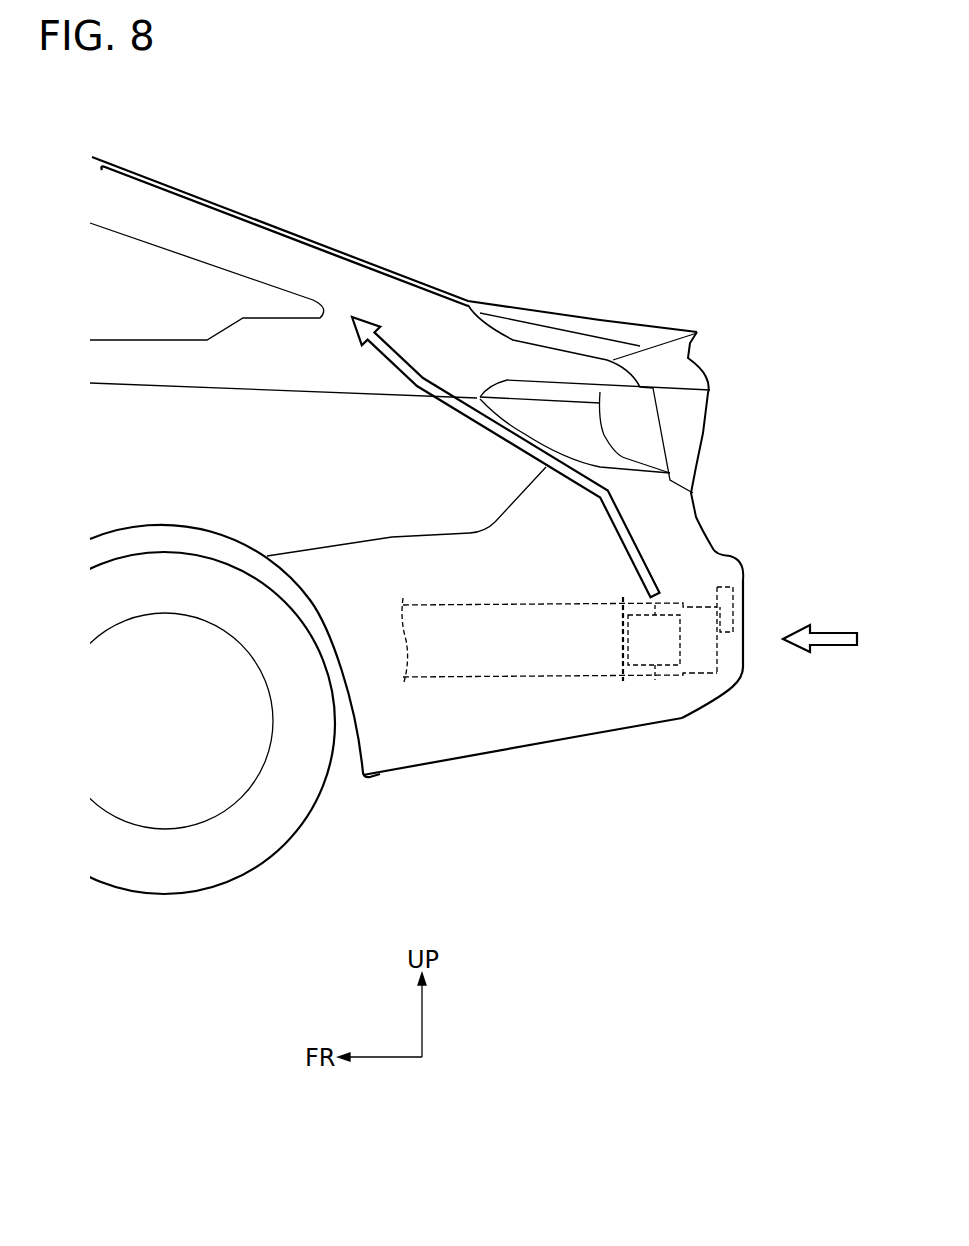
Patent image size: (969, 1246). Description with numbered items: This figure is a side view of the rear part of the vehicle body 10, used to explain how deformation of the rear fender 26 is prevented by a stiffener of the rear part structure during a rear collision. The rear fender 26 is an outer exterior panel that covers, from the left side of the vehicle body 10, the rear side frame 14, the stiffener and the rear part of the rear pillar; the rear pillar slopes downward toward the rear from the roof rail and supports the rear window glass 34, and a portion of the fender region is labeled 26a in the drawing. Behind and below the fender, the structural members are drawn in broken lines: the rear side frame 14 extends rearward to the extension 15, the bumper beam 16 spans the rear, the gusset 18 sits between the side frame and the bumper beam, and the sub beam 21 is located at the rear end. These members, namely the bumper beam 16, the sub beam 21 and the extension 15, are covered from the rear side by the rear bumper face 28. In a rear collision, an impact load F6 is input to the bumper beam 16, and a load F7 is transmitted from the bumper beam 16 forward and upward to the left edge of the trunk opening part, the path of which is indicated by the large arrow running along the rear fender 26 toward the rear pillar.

The vehicle body 10 is at (345, 206).
The rear side frame 14 is at (485, 677).
The extension 15 is at (628, 680).
The bumper beam 16 is at (723, 657).
The gusset 18 is at (663, 665).
The sub beam 21 is at (743, 607).
The rear fender 26 is at (343, 485).
The rear window glass 26a is at (463, 340).
The rear bumper face 28 is at (746, 643).
The rear window glass 34 is at (214, 204).
The impact load F6 is at (833, 647).
The load F7 is at (487, 437).